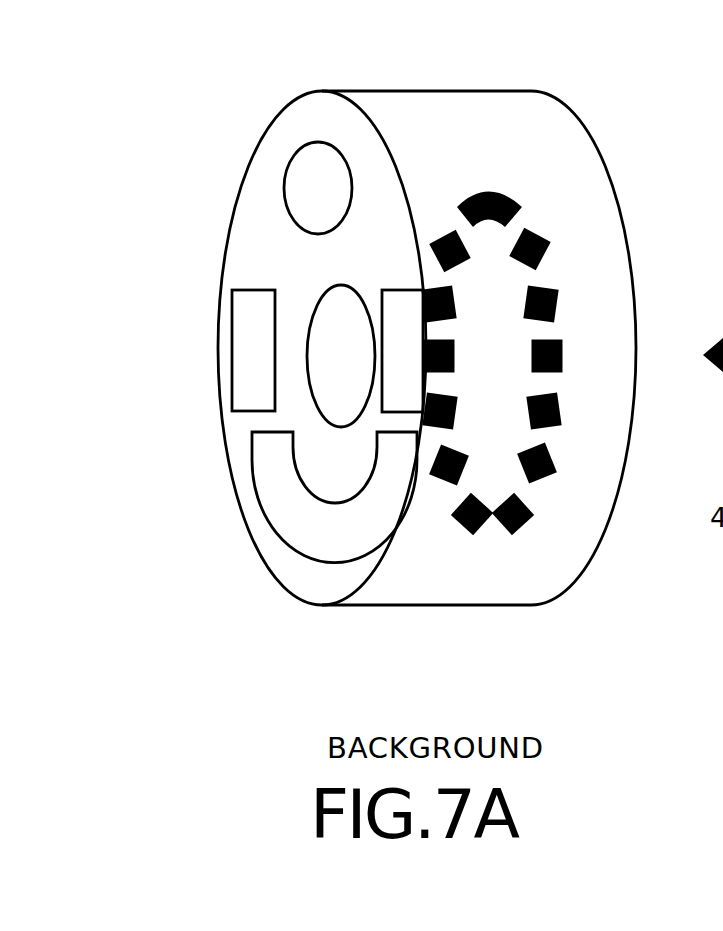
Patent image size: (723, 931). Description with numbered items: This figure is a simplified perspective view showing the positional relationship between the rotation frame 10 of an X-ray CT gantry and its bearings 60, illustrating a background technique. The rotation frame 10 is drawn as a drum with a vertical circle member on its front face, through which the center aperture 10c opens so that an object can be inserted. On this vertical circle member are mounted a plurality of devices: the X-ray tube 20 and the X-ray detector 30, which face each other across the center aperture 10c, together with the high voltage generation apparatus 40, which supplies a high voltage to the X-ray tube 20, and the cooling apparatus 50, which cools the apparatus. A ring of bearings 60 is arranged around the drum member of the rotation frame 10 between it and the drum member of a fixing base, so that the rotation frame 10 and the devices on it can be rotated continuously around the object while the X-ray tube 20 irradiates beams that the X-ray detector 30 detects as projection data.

The rotation frame 10 is at (445, 92).
The center aperture 10c is at (317, 365).
The X-ray tube 20 is at (307, 180).
The X-ray detector 30 is at (280, 533).
The high voltage generation apparatus 40 is at (250, 363).
The cooling apparatus 50 is at (417, 365).
The bearings 60 is at (543, 242).